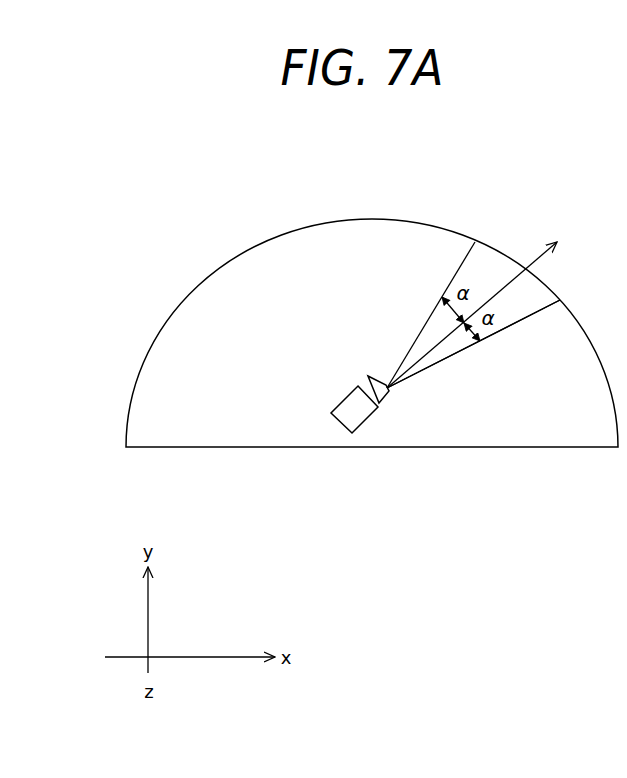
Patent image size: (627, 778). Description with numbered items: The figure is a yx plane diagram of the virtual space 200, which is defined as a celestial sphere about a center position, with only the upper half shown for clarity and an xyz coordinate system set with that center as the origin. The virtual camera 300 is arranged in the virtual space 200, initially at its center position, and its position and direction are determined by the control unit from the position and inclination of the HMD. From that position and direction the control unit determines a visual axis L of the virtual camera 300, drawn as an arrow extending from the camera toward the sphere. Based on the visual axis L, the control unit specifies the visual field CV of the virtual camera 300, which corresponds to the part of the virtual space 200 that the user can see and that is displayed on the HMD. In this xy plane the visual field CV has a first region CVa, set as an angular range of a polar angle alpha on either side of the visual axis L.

The virtual space 200 is at (305, 228).
The virtual camera 300 is at (369, 416).
The visual axis L is at (527, 268).
The visual field CV is at (535, 311).
The first region CVa is at (473, 344).